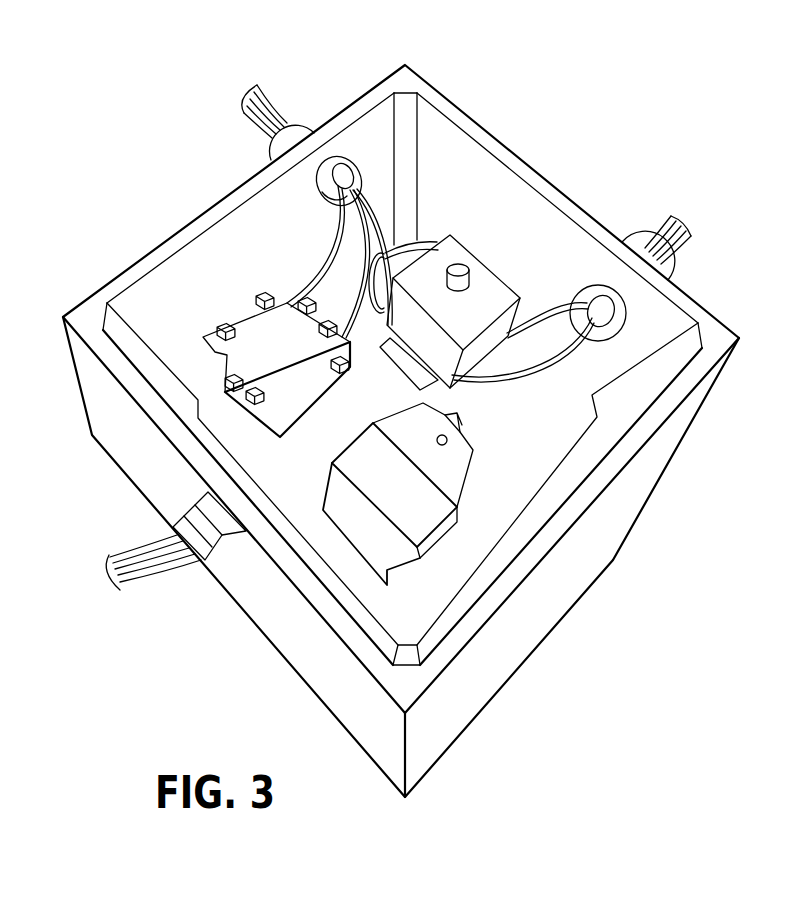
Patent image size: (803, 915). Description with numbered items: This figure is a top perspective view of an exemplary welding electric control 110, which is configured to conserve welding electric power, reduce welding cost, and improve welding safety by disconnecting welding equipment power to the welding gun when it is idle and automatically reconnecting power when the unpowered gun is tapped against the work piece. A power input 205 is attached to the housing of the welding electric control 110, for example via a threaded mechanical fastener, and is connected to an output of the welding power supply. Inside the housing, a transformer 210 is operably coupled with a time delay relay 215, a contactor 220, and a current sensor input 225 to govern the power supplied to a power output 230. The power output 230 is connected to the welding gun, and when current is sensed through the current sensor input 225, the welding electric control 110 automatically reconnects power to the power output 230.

The welding electric control 110 is at (474, 59).
The power input 205 is at (121, 535).
The transformer 210 is at (422, 510).
The time delay relay 215 is at (489, 283).
The contactor 220 is at (272, 337).
The current sensor input 225 is at (651, 198).
The power output 230 is at (303, 94).